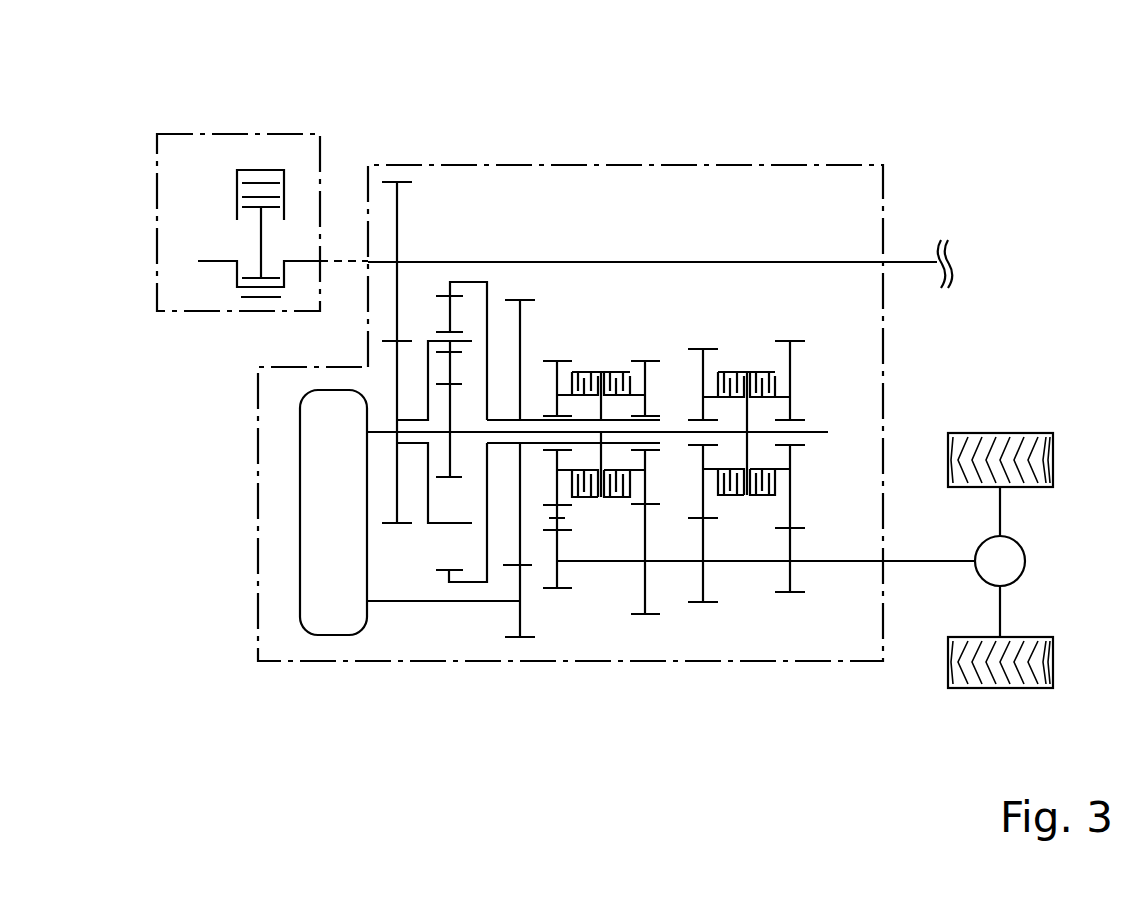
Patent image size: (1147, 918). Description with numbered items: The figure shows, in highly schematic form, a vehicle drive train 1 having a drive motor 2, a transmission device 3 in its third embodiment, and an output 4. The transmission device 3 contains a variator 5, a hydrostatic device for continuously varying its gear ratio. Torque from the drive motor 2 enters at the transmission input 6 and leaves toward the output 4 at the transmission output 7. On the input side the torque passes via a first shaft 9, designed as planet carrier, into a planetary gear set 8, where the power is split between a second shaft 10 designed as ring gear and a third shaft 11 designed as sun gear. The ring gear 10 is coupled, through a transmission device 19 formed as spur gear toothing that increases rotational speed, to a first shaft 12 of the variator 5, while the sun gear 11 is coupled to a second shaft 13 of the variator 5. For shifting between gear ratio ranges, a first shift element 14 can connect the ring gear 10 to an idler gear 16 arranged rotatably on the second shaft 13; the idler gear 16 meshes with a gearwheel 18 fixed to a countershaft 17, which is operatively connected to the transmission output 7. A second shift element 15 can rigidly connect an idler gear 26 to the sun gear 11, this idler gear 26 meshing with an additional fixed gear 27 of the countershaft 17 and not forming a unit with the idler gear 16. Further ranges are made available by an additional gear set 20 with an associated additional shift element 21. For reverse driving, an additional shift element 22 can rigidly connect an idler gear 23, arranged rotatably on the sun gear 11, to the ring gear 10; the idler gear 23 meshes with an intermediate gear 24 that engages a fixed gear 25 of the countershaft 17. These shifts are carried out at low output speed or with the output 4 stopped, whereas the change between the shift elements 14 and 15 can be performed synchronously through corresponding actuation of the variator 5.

The vehicle drive train 1 is at (531, 469).
The drive motor 2 is at (203, 134).
The transmission device 3 is at (325, 660).
The output 4 is at (1003, 690).
The variator 5 is at (327, 590).
The transmission input 6 is at (367, 260).
The transmission output 7 is at (886, 566).
The planetary gear set 8 is at (465, 280).
The first shaft 9 is at (431, 340).
The second shaft 10 is at (482, 280).
The third shaft 11 is at (452, 440).
The first shaft of the variator 12 is at (398, 603).
The second shaft of the variator 13 is at (380, 428).
The first shift element 14 is at (620, 357).
The second shift element 15 is at (735, 357).
The idler gear 16 is at (655, 357).
The countershaft 17 is at (850, 563).
The gearwheel 18 is at (650, 616).
The transmission device 19 is at (510, 580).
The additional gear set 20 is at (799, 538).
The additional shift element 21 is at (765, 357).
The additional shift element 22 is at (588, 357).
The idler gear 23 is at (550, 360).
The intermediate gear 24 is at (542, 517).
The fixed gear 25 is at (562, 595).
The idler gear 26 is at (698, 347).
The additional fixed gear 27 is at (712, 604).